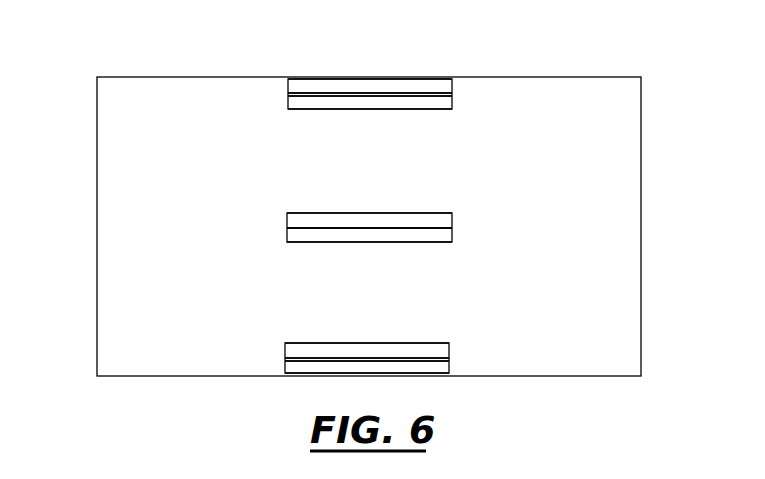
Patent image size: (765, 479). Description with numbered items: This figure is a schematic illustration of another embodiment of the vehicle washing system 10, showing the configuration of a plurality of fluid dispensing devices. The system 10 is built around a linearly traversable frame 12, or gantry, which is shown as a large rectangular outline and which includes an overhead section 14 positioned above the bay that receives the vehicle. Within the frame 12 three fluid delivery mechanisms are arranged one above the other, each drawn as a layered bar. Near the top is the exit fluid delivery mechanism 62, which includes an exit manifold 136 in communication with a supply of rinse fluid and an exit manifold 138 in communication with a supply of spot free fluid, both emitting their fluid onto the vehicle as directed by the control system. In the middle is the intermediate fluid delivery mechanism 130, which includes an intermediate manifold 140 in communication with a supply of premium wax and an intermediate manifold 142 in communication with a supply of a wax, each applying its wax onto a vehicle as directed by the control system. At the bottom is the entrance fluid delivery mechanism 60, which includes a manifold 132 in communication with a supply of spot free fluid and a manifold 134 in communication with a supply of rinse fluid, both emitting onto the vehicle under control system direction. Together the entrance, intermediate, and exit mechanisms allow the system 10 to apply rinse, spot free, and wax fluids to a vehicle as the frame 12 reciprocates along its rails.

The vehicle washing system 10 is at (606, 56).
The frame 12 is at (88, 127).
The overhead section 14 is at (505, 83).
The entrance fluid delivery mechanism 60 is at (470, 338).
The exit fluid delivery mechanism 62 is at (464, 105).
The intermediate fluid delivery mechanism 130 is at (470, 210).
The manifold 132 is at (285, 366).
The manifold 134 is at (285, 351).
The exit manifold 136 is at (288, 101).
The exit manifold 138 is at (288, 89).
The intermediate manifold 140 is at (287, 234).
The intermediate manifold 142 is at (287, 220).